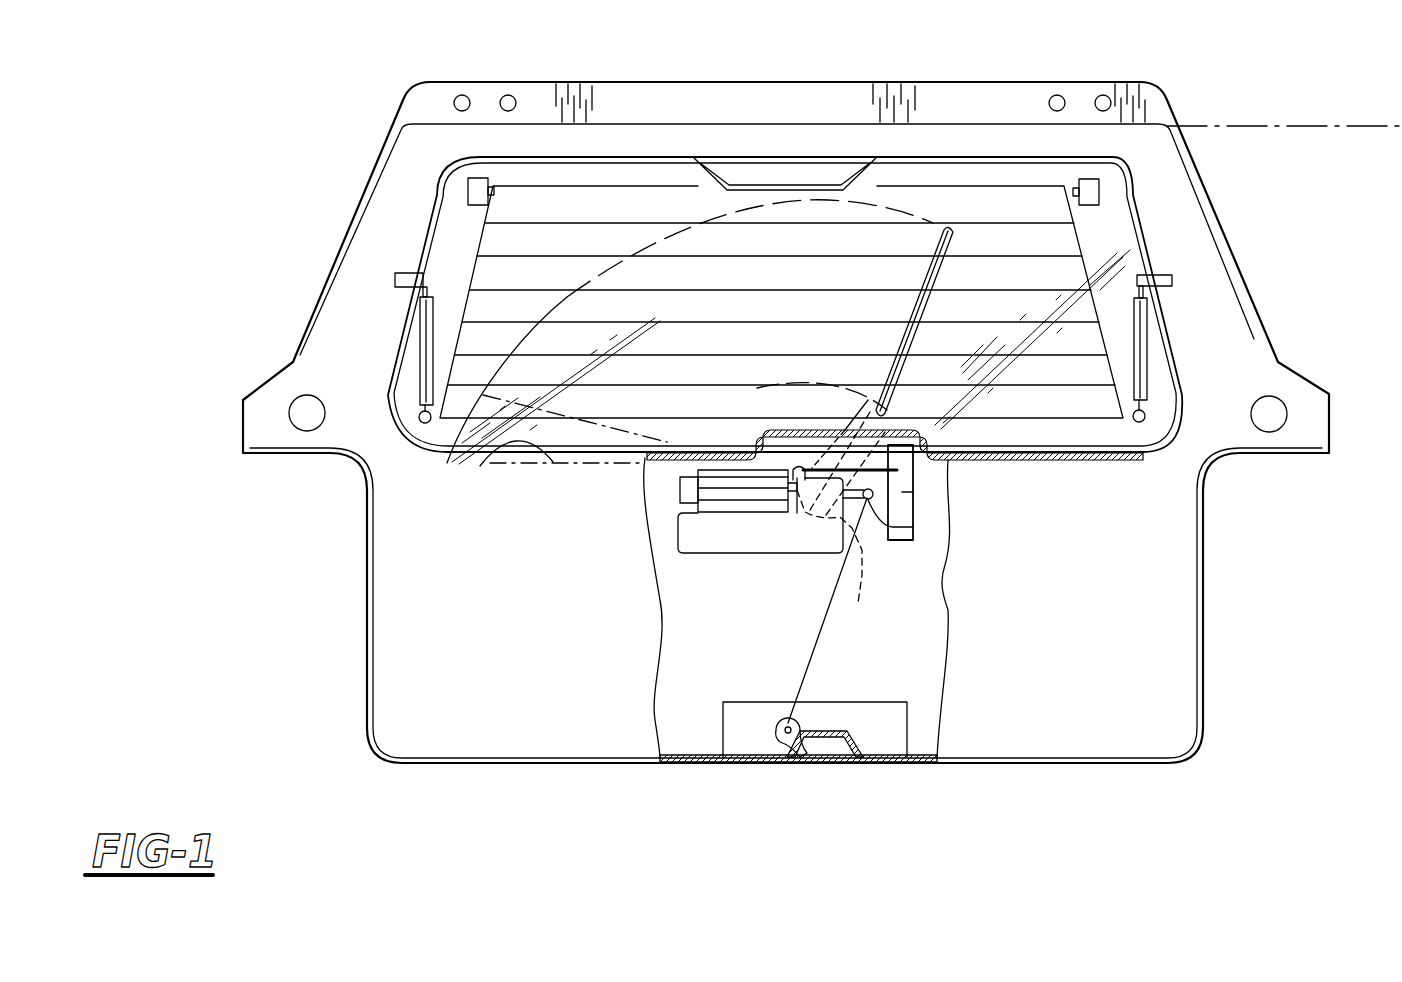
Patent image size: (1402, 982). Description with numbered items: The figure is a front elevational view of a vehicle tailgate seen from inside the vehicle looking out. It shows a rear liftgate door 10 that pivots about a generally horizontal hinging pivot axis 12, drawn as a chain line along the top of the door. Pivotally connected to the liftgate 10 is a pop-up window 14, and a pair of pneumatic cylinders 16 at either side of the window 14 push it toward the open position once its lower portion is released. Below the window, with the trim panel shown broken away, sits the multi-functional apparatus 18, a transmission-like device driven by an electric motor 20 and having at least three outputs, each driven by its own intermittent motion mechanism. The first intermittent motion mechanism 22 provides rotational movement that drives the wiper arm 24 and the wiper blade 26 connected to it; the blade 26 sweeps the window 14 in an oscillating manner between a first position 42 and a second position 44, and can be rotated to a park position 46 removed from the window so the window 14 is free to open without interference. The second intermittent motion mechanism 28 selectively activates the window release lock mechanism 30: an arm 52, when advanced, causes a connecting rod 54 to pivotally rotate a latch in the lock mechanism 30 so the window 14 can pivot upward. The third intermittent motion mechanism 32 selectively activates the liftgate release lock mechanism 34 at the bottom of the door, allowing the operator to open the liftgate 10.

The rear liftgate door 10 is at (402, 632).
The hinging pivot axis 12 is at (1358, 126).
The pop-up window 14 is at (1069, 243).
The pneumatic cylinders 16 is at (1151, 383).
The multi-functional apparatus 18 is at (760, 545).
The electric motor 20 is at (675, 497).
The first intermittent motion mechanism 22 is at (848, 522).
The wiper arm 24 is at (913, 465).
The wiper blade 26 is at (953, 273).
The second intermittent motion mechanism 28 is at (757, 388).
The window release lock mechanism 30 is at (913, 492).
The third intermittent motion mechanism 32 is at (913, 527).
The liftgate release lock mechanism 34 is at (770, 760).
The first position 42 is at (510, 400).
The second position 44 is at (1048, 305).
The park position 46 is at (483, 397).
The arm 52 is at (815, 470).
The connecting rod 54 is at (872, 470).